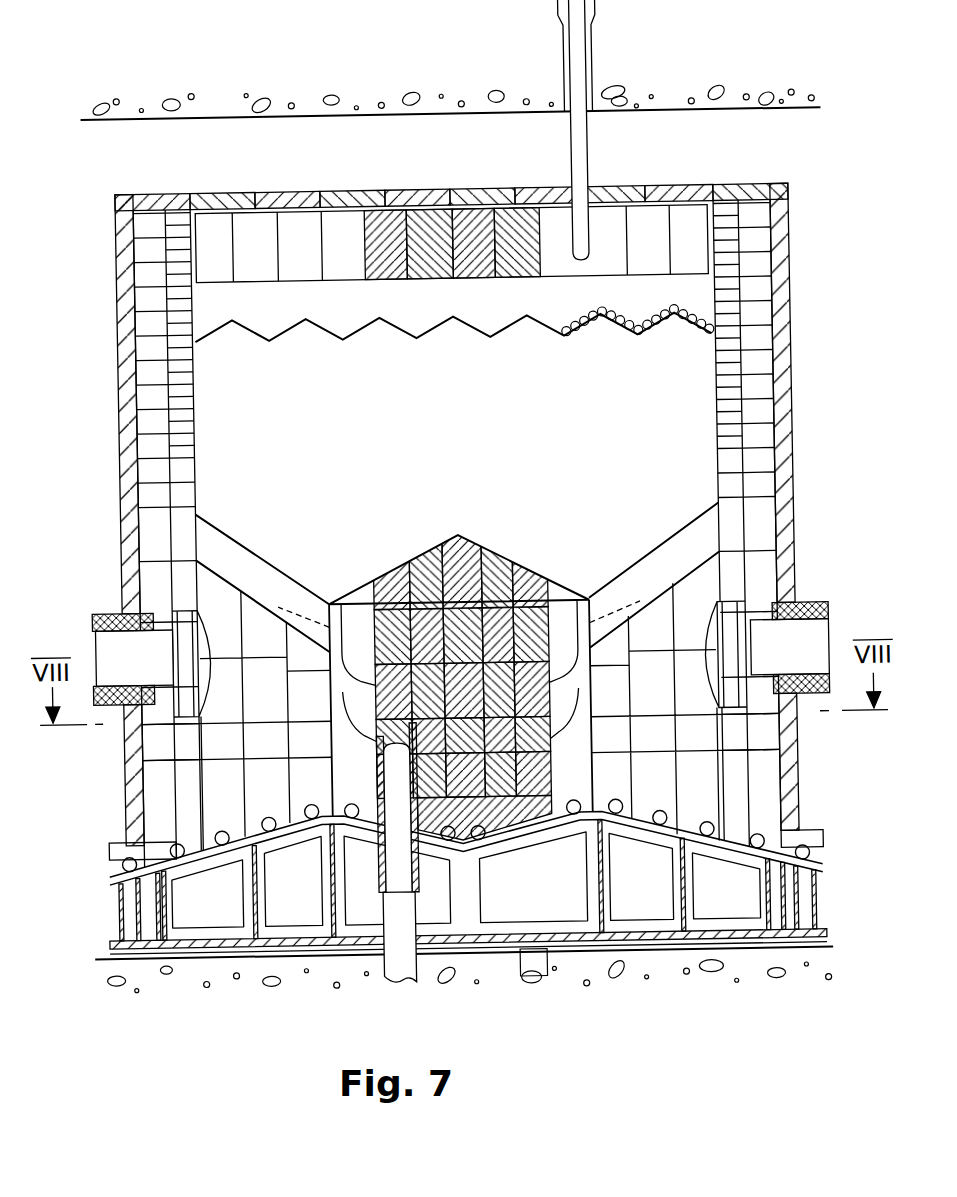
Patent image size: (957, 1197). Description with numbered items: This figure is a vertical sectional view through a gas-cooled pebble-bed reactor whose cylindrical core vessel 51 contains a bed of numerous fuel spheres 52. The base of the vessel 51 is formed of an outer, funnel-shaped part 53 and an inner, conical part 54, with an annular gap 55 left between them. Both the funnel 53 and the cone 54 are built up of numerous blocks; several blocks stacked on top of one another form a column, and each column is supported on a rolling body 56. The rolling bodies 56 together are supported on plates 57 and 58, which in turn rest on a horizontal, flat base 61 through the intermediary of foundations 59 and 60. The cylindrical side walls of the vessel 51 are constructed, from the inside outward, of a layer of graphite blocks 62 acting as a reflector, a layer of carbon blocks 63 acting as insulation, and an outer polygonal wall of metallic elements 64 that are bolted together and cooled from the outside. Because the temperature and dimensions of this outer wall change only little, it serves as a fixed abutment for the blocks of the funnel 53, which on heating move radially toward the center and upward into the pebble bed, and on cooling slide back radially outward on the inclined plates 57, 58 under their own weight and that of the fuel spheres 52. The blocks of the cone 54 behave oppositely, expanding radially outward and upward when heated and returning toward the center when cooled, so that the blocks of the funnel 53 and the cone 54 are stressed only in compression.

The cylindrical core vessel 51 is at (306, 355).
The fuel spheres 52 is at (613, 322).
The funnel-shaped part 53 is at (656, 550).
The conical part 54 is at (509, 555).
The annular gap 55 is at (590, 599).
The rolling body 56 is at (656, 822).
The plate 57 is at (531, 826).
The plate 58 is at (756, 863).
The foundation 59 is at (502, 929).
The foundation 60 is at (612, 927).
The horizontal flat base 61 is at (779, 937).
The graphite blocks 62 is at (183, 235).
The carbon blocks 63 is at (155, 220).
The metallic elements 64 is at (125, 192).